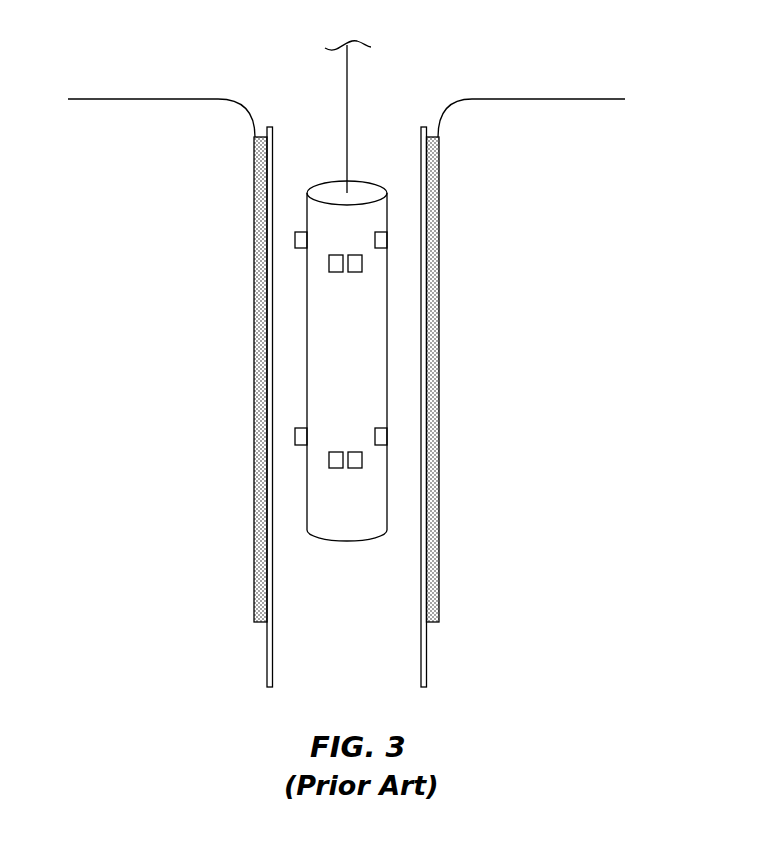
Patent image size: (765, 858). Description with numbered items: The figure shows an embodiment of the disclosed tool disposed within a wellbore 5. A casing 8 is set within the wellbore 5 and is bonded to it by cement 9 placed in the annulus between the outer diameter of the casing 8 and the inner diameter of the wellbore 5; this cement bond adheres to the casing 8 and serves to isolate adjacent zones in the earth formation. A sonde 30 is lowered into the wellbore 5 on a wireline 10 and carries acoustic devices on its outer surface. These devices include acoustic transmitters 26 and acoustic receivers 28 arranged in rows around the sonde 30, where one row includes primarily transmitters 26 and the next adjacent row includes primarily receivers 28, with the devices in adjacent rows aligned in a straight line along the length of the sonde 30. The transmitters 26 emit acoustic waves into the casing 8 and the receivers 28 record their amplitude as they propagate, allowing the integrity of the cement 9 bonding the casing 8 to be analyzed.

The wellbore 5 is at (378, 89).
The casing 8 is at (267, 668).
The cement 9 is at (254, 600).
The wireline 10 is at (347, 95).
The acoustic transmitters 26 is at (355, 254).
The acoustic receivers 28 is at (355, 451).
The sonde 30 is at (347, 542).